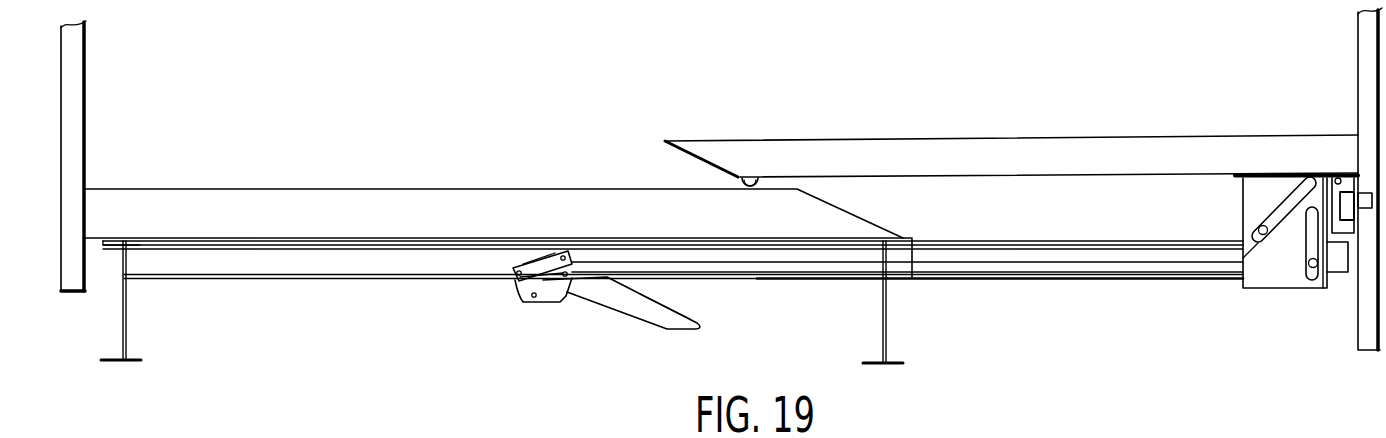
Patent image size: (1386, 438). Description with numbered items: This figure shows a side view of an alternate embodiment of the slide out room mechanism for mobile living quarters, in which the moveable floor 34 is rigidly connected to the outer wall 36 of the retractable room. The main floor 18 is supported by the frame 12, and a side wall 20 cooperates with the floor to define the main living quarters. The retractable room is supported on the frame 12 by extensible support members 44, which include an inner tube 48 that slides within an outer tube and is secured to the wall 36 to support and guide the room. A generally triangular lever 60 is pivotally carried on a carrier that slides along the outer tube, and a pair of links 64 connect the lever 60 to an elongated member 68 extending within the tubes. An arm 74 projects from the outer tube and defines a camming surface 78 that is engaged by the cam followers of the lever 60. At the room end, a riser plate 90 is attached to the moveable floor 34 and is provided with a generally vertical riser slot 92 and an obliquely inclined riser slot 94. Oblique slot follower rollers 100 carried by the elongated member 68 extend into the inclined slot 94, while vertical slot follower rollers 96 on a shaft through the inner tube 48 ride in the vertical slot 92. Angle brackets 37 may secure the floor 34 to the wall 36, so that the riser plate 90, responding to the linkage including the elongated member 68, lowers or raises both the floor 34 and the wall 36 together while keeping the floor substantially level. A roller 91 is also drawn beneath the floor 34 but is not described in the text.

The frame 12 is at (126, 308).
The main floor 18 is at (312, 197).
The side wall 20 is at (75, 113).
The floor 34 is at (1002, 143).
The outer wall 36 is at (1366, 32).
The angle brackets 37 is at (1336, 178).
The extensible slide out room support members 44 is at (398, 287).
The inner tube 48 is at (1125, 279).
The lever 60 is at (535, 254).
The links 64 is at (540, 264).
The elongated member 68 is at (640, 268).
The arm 74 is at (637, 309).
The camming surface 78 is at (673, 306).
The riser plate 90 is at (1268, 266).
The roller 91 is at (760, 180).
The vertical riser slot 92 is at (1308, 230).
The obliquely inclined riser slot 94 is at (1300, 190).
The vertical slot follower rollers 96 is at (1314, 270).
The oblique slot followers 100 is at (1259, 230).